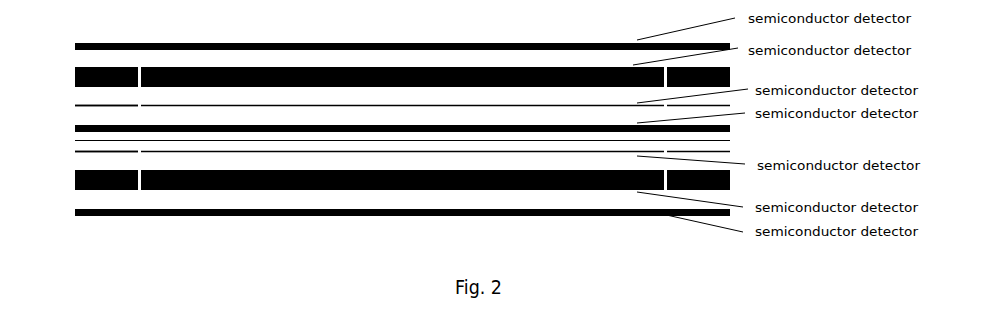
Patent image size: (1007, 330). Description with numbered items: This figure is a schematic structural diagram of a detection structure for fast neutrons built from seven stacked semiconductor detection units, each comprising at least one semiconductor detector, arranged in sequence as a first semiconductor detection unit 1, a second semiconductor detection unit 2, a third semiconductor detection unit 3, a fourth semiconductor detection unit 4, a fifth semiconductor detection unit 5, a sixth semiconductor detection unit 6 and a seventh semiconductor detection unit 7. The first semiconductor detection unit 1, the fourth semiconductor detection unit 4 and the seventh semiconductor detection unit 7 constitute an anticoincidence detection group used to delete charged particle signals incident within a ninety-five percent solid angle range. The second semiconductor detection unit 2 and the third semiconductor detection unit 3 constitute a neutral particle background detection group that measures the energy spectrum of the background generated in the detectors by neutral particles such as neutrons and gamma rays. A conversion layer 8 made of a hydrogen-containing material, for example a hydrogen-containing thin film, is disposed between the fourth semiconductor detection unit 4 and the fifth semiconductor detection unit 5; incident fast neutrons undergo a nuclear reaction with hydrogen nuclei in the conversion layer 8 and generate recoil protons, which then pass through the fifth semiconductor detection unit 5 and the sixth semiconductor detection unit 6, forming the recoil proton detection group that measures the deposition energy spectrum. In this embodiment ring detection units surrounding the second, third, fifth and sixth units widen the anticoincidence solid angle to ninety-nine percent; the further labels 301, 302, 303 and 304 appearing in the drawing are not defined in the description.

The first semiconductor detection unit 1 is at (75, 43).
The second semiconductor detection unit 2 is at (213, 64).
The first electrode segment 301 is at (75, 69).
The third semiconductor detection unit 3 is at (140, 103).
The second electrode segment 302 is at (75, 106).
The fourth semiconductor detection unit 4 is at (75, 126).
The fifth semiconductor detection unit 5 is at (75, 141).
The third electrode segment 303 is at (75, 152).
The sixth semiconductor detection unit 6 is at (140, 153).
The fourth electrode segment 304 is at (75, 180).
The seventh semiconductor detection unit 7 is at (163, 191).
The conversion layer 8 is at (75, 212).